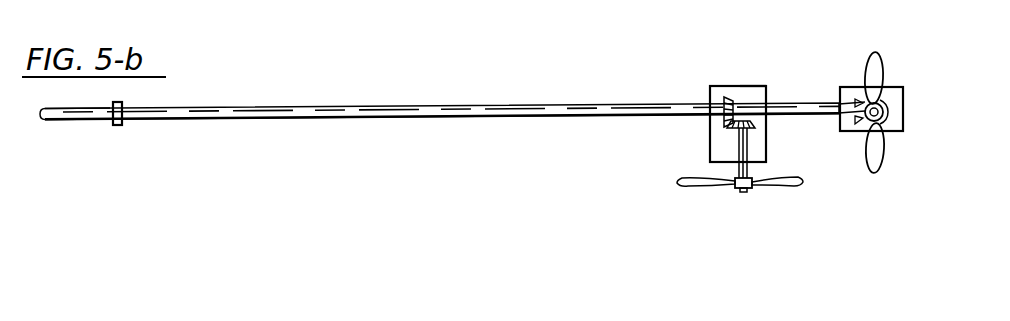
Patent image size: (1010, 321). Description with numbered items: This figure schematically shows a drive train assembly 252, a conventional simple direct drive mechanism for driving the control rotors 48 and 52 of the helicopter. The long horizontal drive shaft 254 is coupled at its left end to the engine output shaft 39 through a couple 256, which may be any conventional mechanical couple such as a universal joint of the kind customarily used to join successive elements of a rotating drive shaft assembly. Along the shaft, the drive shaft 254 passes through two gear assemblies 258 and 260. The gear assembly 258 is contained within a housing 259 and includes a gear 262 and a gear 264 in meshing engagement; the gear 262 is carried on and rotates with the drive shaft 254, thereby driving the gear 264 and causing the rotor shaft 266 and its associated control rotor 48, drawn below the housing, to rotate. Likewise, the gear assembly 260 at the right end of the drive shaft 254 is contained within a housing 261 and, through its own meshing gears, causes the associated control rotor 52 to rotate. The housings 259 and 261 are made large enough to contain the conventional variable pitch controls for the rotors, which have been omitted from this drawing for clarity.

The engine output shaft 39 is at (101, 120).
The control rotor 48 is at (697, 188).
The control rotor 52 is at (878, 57).
The drive train assembly 252 is at (750, 206).
The drive shaft 254 is at (447, 105).
The couple 256 is at (118, 125).
The gear assembly 258 is at (710, 97).
The housing 259 is at (758, 86).
The gear assembly 260 is at (895, 101).
The housing 261 is at (885, 130).
The gear 262 is at (732, 98).
The gear 264 is at (756, 124).
The rotor shaft 266 is at (748, 150).